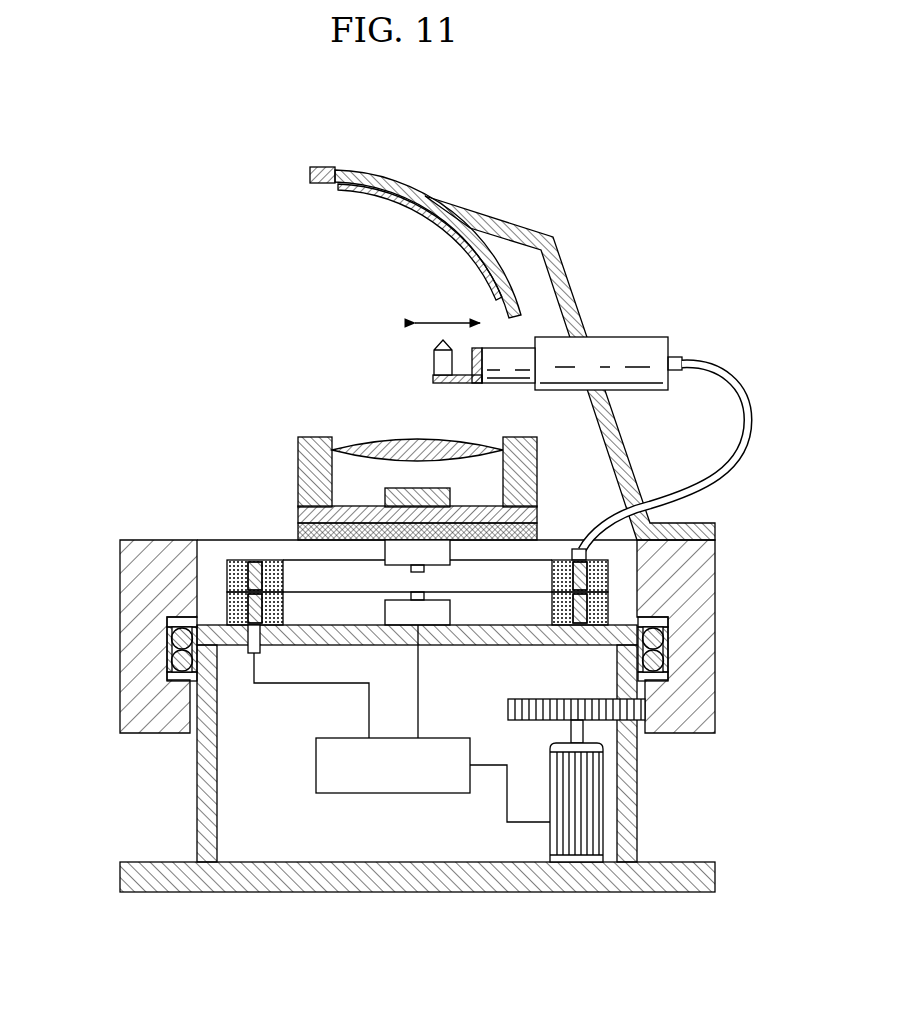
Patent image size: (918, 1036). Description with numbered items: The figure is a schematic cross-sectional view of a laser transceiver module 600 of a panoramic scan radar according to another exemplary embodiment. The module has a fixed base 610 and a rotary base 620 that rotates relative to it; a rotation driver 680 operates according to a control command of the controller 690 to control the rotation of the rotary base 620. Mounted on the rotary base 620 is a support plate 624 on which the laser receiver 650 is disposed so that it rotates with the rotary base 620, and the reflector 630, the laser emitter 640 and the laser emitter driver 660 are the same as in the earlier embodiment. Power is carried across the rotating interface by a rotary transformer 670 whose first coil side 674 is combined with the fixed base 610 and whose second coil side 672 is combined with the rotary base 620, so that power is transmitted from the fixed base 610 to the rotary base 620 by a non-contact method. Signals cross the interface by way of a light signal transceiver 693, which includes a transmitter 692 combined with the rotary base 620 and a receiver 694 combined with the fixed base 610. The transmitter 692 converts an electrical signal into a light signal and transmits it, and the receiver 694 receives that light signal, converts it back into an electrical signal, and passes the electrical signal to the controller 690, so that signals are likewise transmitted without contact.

The laser transceiver module 600 is at (178, 298).
The fixed base 610 is at (197, 786).
The rotary base 620 is at (133, 657).
The support plate 624 is at (300, 531).
The reflector 630 is at (330, 167).
The laser emitter 640 is at (430, 360).
The laser receiver 650 is at (292, 447).
The laser emitter driver 660 is at (636, 337).
The rotary transformer 670 is at (62, 547).
The second coil side 672 is at (227, 573).
The first coil side 674 is at (227, 605).
The rotation driver 680 is at (593, 792).
The controller 690 is at (403, 793).
The transmitter 692 is at (433, 552).
The light signal transceiver 693 is at (778, 487).
The receiver 694 is at (433, 612).